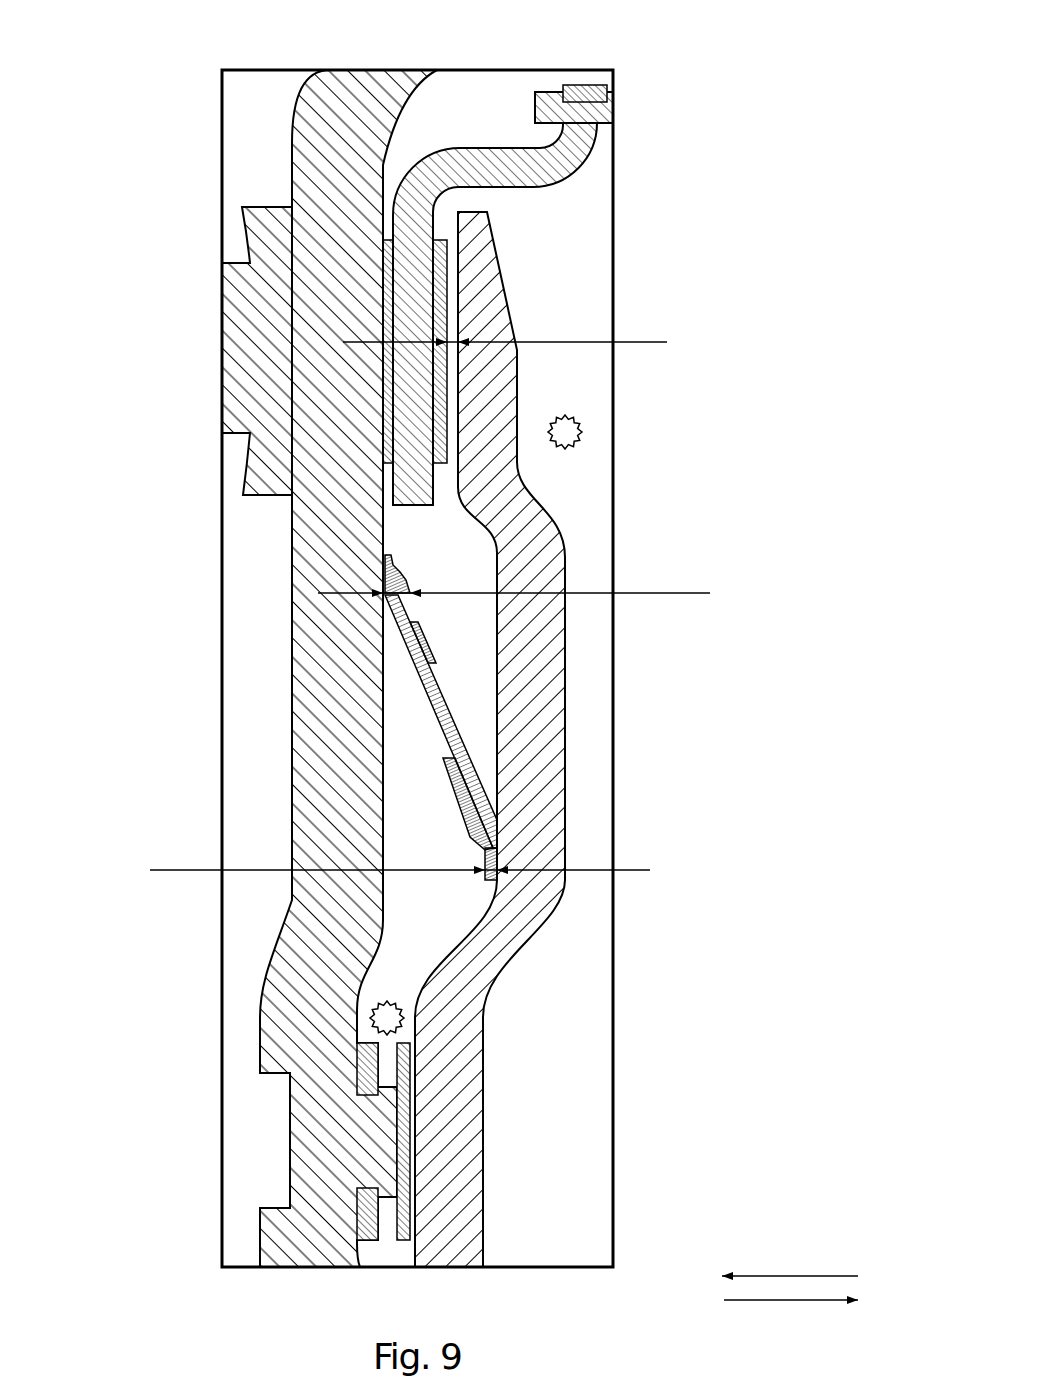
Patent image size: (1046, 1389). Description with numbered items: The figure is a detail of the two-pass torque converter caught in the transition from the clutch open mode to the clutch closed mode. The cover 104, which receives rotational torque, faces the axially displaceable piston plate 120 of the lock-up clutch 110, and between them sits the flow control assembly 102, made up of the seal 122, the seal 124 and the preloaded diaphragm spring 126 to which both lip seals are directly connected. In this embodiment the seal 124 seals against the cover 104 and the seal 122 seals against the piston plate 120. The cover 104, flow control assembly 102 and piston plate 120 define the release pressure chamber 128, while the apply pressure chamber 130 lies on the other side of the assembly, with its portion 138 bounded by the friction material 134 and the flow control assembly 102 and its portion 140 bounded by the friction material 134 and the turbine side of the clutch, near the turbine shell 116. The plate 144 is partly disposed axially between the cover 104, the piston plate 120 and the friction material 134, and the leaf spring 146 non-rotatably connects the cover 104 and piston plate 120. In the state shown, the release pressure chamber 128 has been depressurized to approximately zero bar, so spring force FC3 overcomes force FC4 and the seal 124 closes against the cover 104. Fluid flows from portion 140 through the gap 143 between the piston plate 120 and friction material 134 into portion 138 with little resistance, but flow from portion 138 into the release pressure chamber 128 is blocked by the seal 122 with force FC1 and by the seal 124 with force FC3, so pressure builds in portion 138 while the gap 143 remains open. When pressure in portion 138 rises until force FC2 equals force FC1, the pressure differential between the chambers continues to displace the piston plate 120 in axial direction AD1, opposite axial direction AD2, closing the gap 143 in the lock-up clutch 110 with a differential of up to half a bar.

The flow control assembly 102 is at (470, 745).
The cover 104 is at (290, 942).
The lock-up clutch 110 is at (515, 310).
The turbine shell 116 is at (563, 270).
The piston plate 120 is at (487, 980).
The seal 122 is at (453, 785).
The seal 124 is at (427, 637).
The spring 126 is at (497, 693).
The release pressure chamber 128 is at (433, 918).
The apply pressure chamber 130 is at (532, 258).
The friction material 134 is at (386, 240).
The portion of apply pressure chamber 138 is at (450, 543).
The portion of apply pressure chamber 140 is at (465, 244).
The gap 143 is at (567, 342).
The plate 144 is at (578, 88).
The leaf spring 146 is at (356, 1057).
The force FC1 is at (197, 870).
The force FC2 is at (632, 872).
The force FC3 is at (650, 593).
The force FC4 is at (365, 595).
The axial direction AD1 is at (765, 1276).
The axial direction AD2 is at (788, 1300).